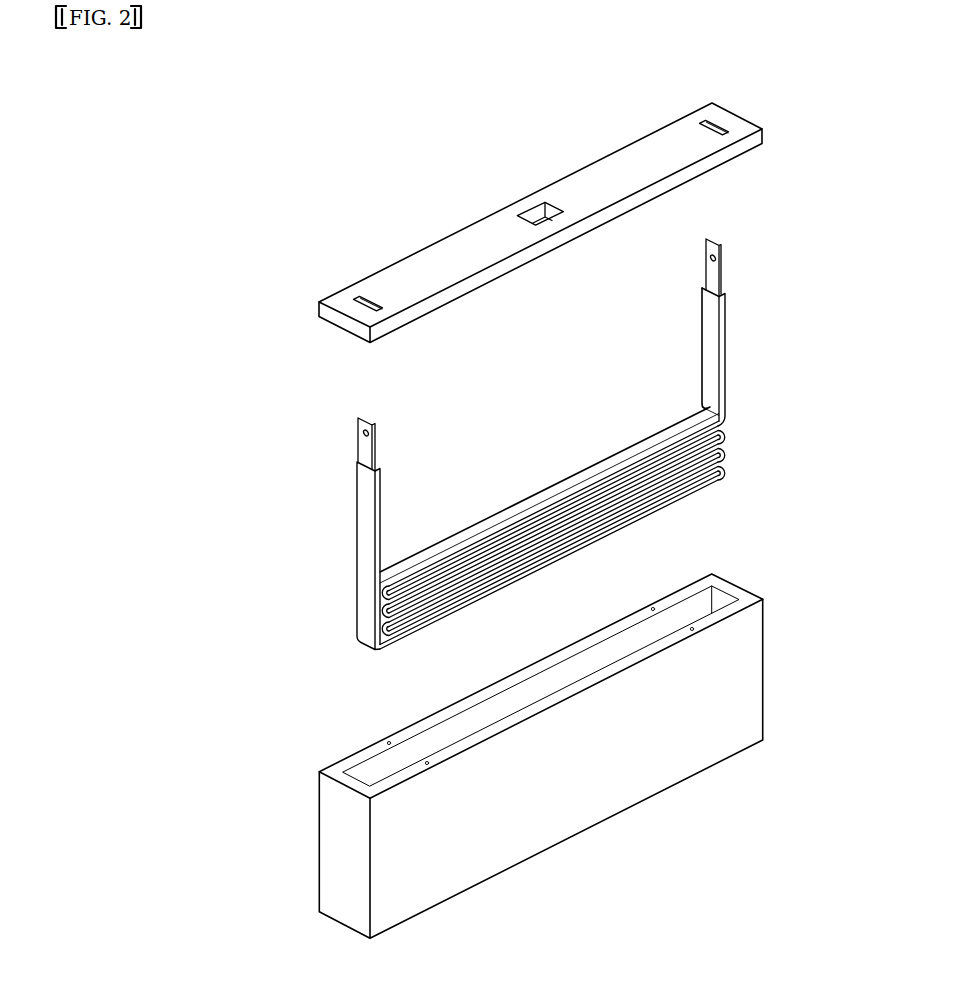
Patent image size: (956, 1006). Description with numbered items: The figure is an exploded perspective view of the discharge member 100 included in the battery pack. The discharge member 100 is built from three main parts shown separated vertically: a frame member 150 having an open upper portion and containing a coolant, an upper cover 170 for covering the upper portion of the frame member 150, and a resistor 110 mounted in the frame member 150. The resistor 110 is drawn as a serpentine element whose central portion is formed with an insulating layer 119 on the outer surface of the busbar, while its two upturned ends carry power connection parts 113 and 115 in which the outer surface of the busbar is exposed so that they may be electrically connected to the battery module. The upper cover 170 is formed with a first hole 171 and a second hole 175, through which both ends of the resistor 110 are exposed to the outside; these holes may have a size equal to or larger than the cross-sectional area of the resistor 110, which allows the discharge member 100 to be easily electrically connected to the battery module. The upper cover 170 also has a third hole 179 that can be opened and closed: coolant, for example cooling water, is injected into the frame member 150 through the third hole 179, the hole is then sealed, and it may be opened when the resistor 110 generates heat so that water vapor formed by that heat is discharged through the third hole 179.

The discharge member 100 is at (511, 83).
The resistor 110 is at (735, 442).
The power connection part 113 is at (366, 447).
The power connection part 115 is at (717, 270).
The insulating layer 119 is at (366, 598).
The frame member 150 is at (333, 861).
The upper cover 170 is at (438, 255).
The first hole 171 is at (358, 300).
The second hole 175 is at (716, 128).
The third hole 179 is at (538, 214).